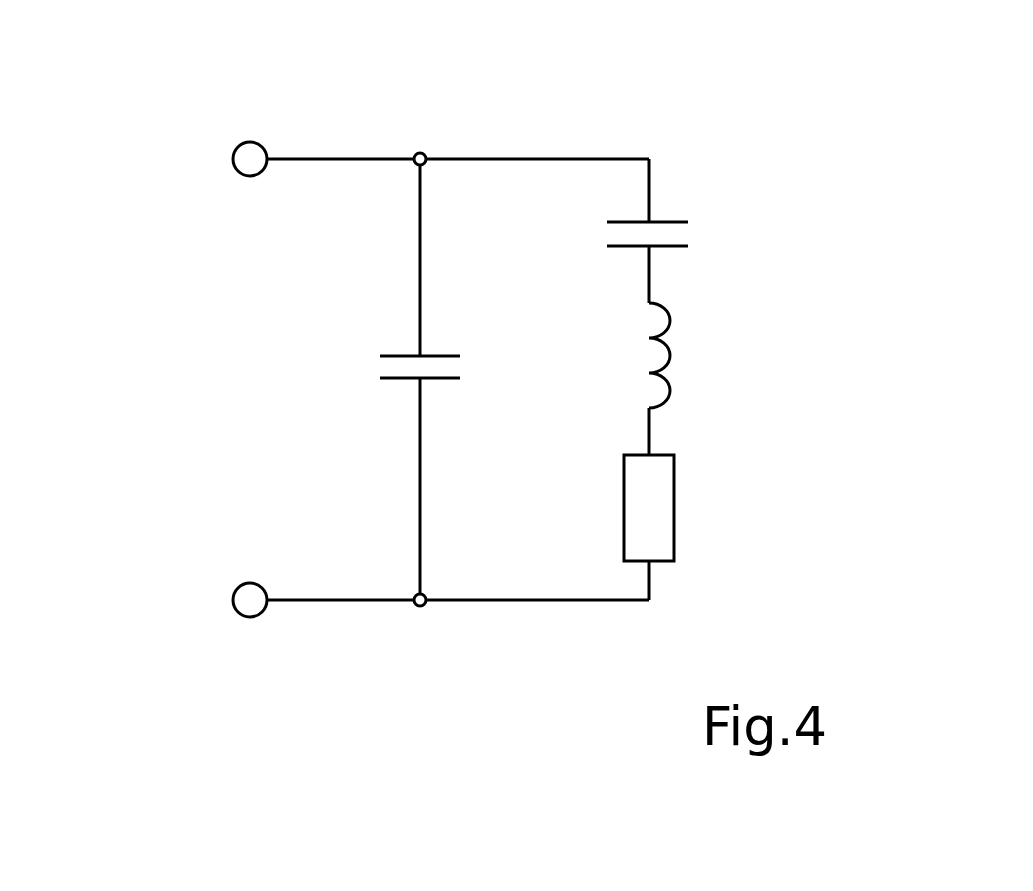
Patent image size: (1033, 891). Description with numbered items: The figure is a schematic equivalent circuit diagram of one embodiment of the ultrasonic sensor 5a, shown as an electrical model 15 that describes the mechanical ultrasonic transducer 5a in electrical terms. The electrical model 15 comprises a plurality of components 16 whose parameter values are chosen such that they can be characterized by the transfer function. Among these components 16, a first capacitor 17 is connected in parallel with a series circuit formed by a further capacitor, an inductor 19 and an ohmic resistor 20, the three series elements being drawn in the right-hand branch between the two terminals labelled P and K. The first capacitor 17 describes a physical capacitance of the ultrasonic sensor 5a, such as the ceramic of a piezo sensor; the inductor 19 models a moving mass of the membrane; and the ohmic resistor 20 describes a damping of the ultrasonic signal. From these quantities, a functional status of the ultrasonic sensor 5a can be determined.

The ultrasonic sensor 5a is at (640, 95).
The components 16 is at (765, 167).
The first capacitor 17 is at (437, 355).
The inductor 19 is at (682, 247).
The ohmic resistor 20 is at (674, 543).
The first terminal P is at (215, 195).
The connection K is at (152, 423).
The electrical model 15 is at (180, 545).